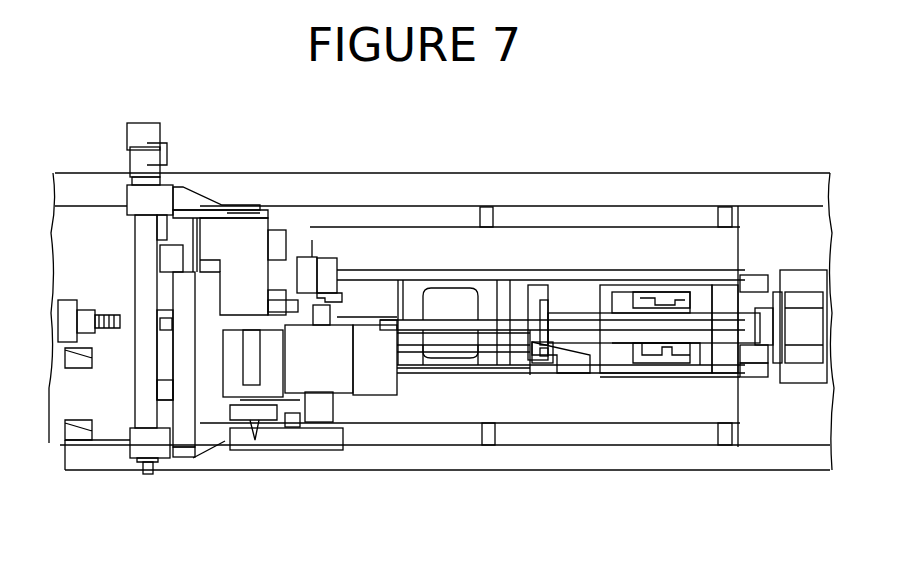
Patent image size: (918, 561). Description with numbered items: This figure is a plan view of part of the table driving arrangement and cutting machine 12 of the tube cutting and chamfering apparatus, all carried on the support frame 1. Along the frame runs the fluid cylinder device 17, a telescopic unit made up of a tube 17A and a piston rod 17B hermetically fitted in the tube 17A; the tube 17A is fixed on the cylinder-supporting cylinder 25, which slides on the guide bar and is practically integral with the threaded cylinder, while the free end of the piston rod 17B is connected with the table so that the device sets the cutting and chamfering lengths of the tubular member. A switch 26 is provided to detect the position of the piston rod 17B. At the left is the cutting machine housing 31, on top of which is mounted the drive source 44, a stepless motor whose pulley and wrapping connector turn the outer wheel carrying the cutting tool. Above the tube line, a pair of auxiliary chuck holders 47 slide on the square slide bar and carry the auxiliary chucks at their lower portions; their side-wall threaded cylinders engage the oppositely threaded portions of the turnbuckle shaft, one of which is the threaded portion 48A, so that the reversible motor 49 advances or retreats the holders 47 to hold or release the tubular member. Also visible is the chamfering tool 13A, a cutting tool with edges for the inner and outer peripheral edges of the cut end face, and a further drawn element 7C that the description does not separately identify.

The support frame 1 is at (639, 452).
The cutting machine 12 is at (245, 166).
The reversible motor 49 is at (137, 168).
The auxiliary chuck holders 47 is at (155, 256).
The chamfering tool 13A is at (110, 310).
The cutting machine housing 31 is at (207, 310).
The threaded portion 48A is at (148, 474).
The drive source 44 is at (335, 358).
The piston rod 17B is at (447, 318).
The drive rod 7C is at (453, 358).
The switch 26 is at (575, 364).
The fluid cylinder device 17 is at (567, 296).
The tube 17A is at (622, 320).
The cylinder-supporting cylinder 25 is at (802, 318).